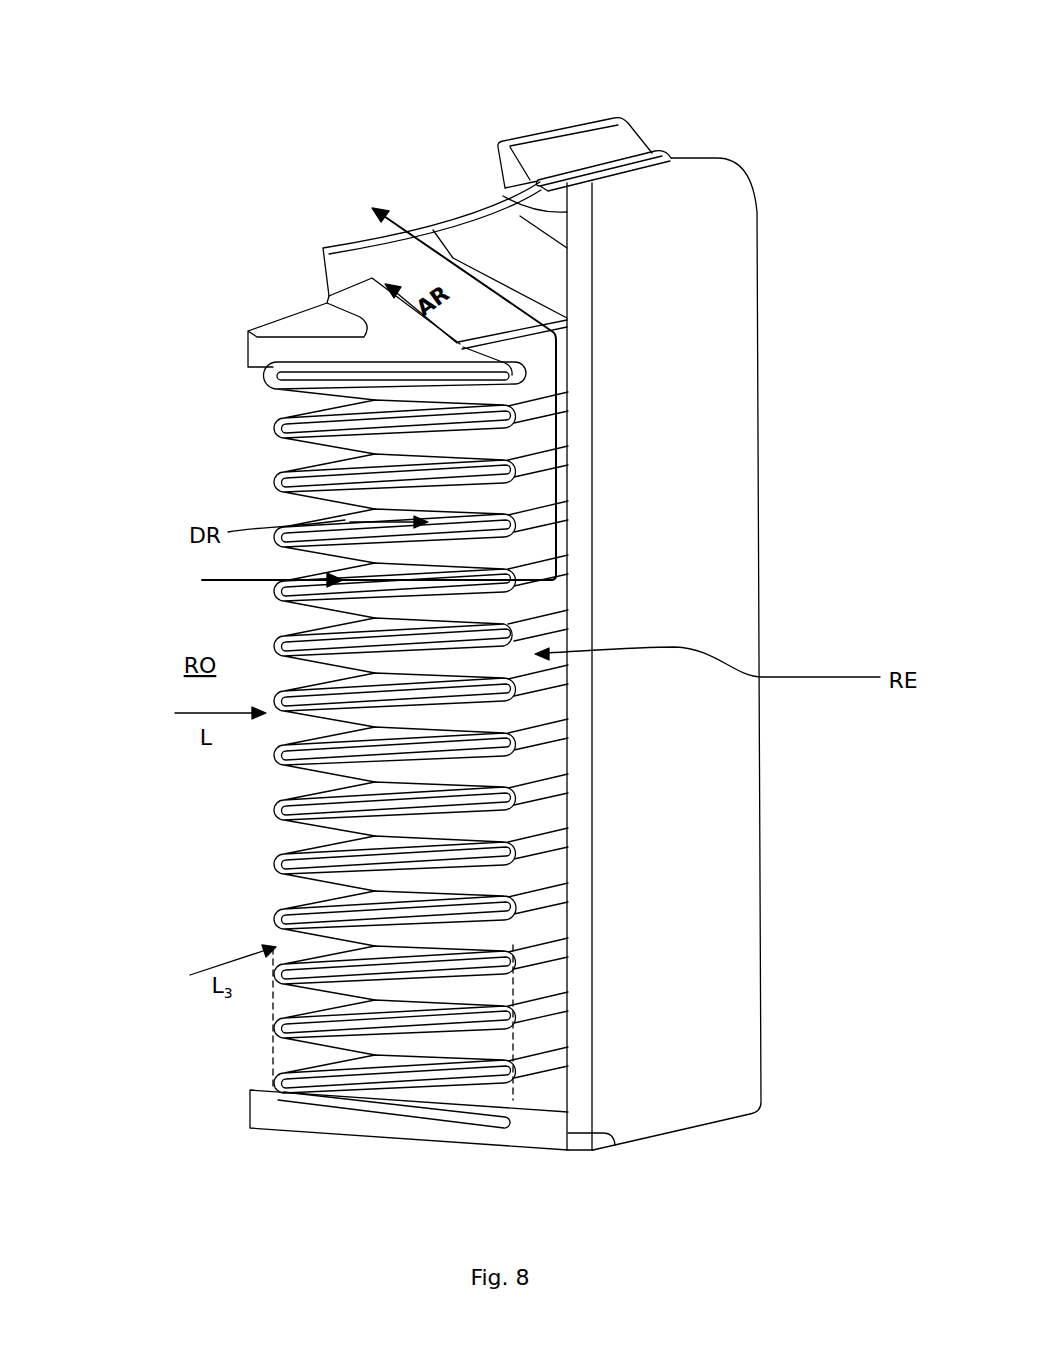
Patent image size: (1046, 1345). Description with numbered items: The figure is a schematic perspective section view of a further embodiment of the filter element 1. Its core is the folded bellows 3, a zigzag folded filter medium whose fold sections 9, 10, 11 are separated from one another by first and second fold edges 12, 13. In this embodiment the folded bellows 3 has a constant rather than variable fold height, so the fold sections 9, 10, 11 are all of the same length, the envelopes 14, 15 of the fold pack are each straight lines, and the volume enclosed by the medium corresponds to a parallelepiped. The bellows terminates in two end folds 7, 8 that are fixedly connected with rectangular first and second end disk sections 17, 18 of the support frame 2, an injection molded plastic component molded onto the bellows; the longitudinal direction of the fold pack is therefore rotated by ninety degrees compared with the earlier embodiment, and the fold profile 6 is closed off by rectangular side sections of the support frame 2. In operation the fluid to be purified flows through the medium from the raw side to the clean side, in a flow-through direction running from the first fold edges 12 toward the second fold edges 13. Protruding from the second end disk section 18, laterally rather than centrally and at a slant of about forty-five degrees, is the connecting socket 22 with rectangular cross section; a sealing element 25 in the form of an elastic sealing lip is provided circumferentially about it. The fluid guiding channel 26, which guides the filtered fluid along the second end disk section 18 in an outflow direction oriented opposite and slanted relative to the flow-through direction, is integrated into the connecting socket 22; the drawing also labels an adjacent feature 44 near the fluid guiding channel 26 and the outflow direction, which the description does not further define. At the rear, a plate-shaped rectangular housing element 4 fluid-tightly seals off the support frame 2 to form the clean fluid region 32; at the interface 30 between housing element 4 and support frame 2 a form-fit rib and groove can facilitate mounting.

The filter element 1 is at (445, 106).
The support frame 2 is at (513, 1157).
The folded bellows 3 is at (266, 490).
The housing element 4 is at (732, 1020).
The fold profile 6 is at (304, 646).
The end fold 7 is at (300, 1093).
The end fold 8 is at (296, 373).
The fold section 9 is at (337, 848).
The fold section 10 is at (355, 815).
The fold section 11 is at (340, 795).
The first fold edge 12 is at (273, 812).
The second fold edge 13 is at (550, 842).
The envelope 14 is at (270, 1045).
The envelope 15 is at (513, 1043).
The first end disk section 17 is at (392, 1123).
The second end disk section 18 is at (301, 345).
The connecting socket 22 is at (545, 198).
The sealing element 25 is at (562, 153).
The fluid guiding channel 26 is at (420, 282).
The interface 30 is at (615, 1145).
The clean fluid region 32 is at (558, 760).
The curved guide 44 is at (403, 226).